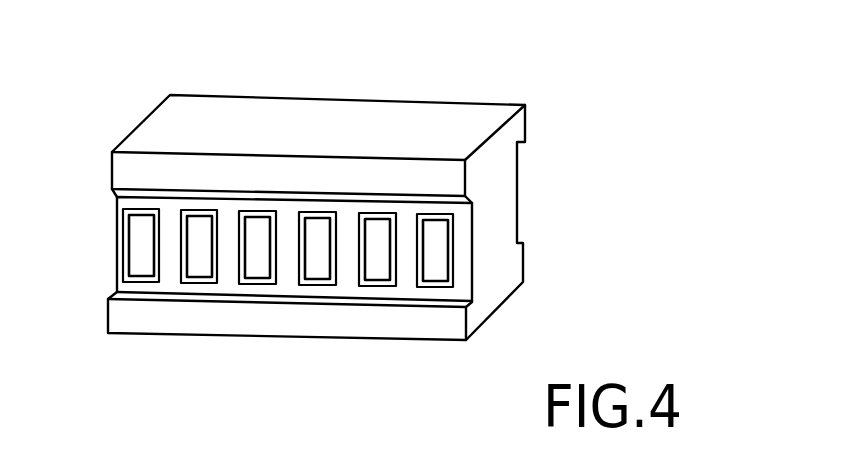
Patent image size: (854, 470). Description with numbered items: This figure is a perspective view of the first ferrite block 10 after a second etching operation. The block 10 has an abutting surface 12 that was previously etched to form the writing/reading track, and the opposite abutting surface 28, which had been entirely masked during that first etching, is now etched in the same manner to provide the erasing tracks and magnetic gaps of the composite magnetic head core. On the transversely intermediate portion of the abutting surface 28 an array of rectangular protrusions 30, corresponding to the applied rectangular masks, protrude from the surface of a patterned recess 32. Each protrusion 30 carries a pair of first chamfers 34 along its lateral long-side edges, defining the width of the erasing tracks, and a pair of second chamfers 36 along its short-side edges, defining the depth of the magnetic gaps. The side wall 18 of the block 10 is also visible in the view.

The first ferrite block 10 is at (150, 72).
The abutting surface 12 is at (527, 112).
The side wall 18 is at (517, 201).
The opposite abutting surface 28 is at (127, 173).
The rectangular protrusions 30 is at (138, 253).
The patterned recess 32 is at (465, 288).
The first chamfers 34 is at (450, 258).
The second chamfers 36 is at (437, 216).